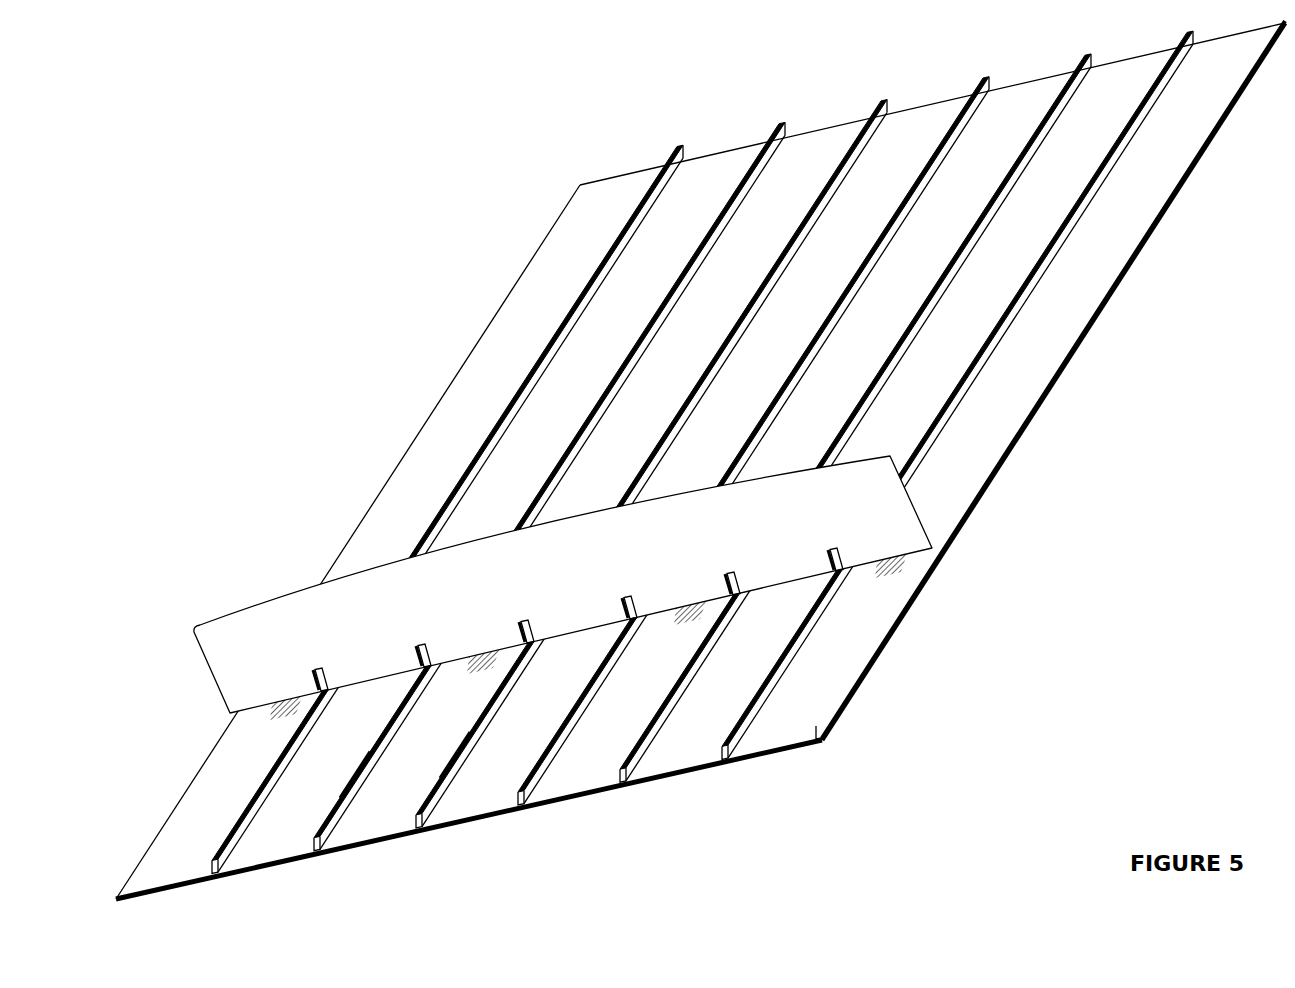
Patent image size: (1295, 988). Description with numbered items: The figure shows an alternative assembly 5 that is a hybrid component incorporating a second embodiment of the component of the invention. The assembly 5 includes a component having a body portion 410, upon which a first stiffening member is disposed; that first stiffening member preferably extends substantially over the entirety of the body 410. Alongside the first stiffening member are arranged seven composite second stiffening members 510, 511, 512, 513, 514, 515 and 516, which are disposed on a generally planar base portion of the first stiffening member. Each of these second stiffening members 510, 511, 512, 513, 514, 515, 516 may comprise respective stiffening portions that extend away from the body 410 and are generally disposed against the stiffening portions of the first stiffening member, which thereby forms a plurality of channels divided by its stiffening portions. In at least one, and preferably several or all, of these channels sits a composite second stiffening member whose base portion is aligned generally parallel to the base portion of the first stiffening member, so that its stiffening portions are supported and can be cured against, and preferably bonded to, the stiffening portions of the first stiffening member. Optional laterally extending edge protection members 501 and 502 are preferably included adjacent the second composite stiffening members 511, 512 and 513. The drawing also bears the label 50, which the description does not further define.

The assembly 5 is at (428, 346).
The heat sink 50 is at (877, 657).
The body portion 410 is at (475, 820).
The laterally extending edge protection member 501 is at (357, 765).
The laterally extending edge protection member 502 is at (449, 757).
The second stiffening member 510 is at (236, 815).
The second composite stiffening member 511 is at (324, 815).
The second composite stiffening member 512 is at (414, 815).
The second composite stiffening member 513 is at (521, 773).
The second stiffening member 514 is at (614, 762).
The second stiffening member 515 is at (714, 751).
The second stiffening member 516 is at (811, 730).